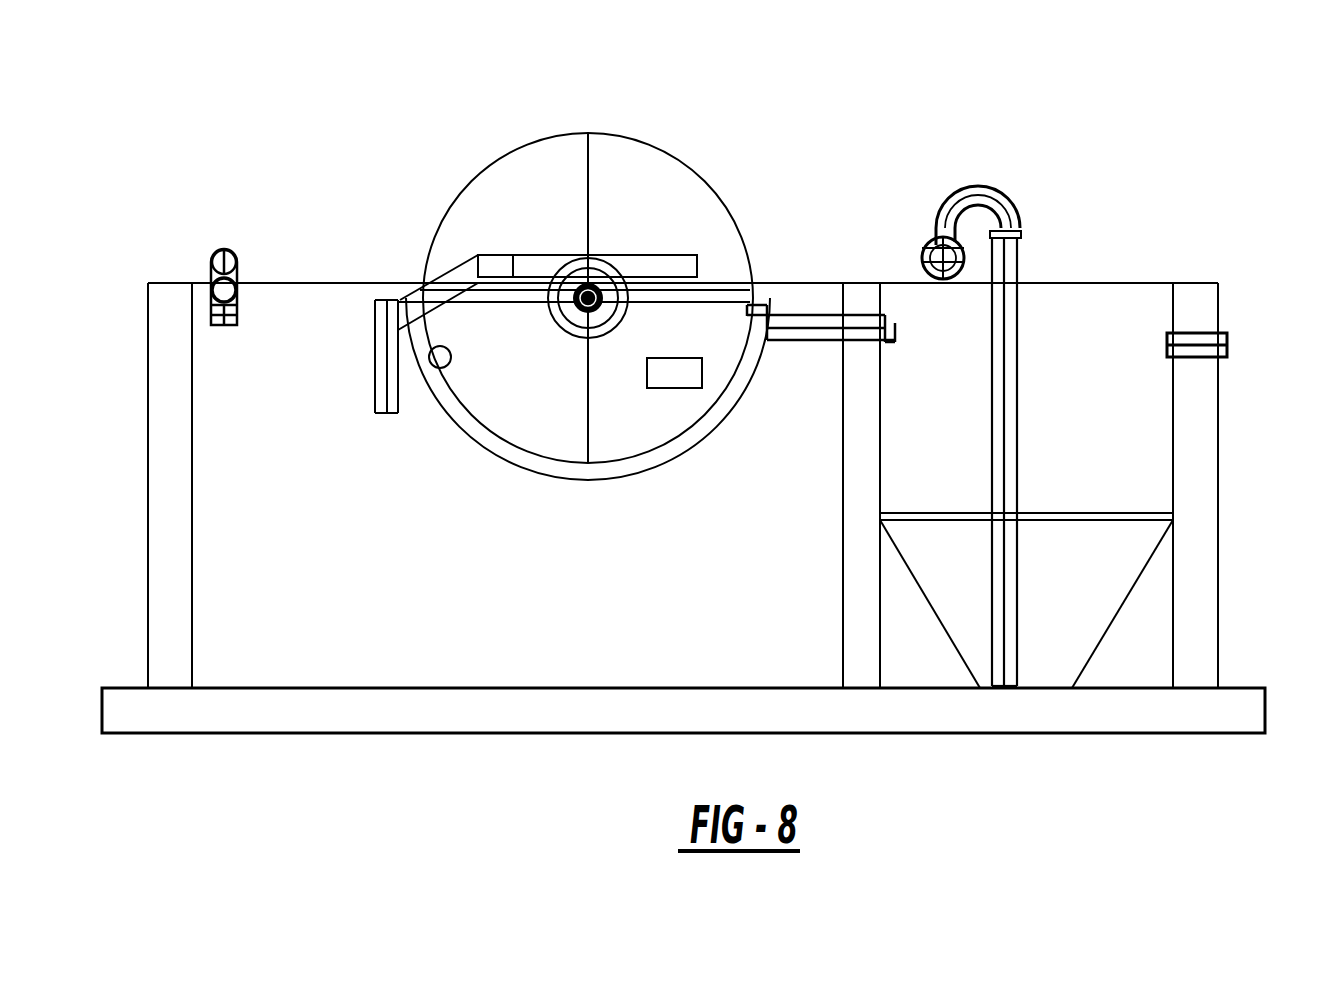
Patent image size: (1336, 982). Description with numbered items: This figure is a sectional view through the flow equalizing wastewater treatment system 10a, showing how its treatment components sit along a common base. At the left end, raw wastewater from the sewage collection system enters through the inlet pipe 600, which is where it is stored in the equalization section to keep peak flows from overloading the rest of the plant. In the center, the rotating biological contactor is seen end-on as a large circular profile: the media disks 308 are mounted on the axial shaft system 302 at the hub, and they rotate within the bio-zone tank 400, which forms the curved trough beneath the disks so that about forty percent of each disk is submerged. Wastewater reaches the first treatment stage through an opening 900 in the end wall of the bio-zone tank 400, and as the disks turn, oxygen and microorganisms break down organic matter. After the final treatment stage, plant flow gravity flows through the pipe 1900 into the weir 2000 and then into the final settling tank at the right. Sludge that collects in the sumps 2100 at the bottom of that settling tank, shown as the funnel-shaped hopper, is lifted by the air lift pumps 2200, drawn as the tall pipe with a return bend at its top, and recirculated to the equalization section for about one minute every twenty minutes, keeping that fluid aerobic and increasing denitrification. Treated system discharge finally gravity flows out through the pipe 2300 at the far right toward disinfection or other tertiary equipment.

The flow equalizing wastewater treatment system 10a is at (362, 156).
The media disks 308 is at (674, 146).
The bio-zone tank 400 is at (565, 430).
The axial shaft system 302 is at (560, 328).
The opening 900 is at (678, 373).
The inlet pipe 600 is at (198, 251).
The pipe 1900 is at (813, 323).
The weir 2000 is at (885, 343).
The air lift pumps 2200 is at (1005, 355).
The sumps 2100 is at (1086, 550).
The pipe 2300 is at (1227, 343).